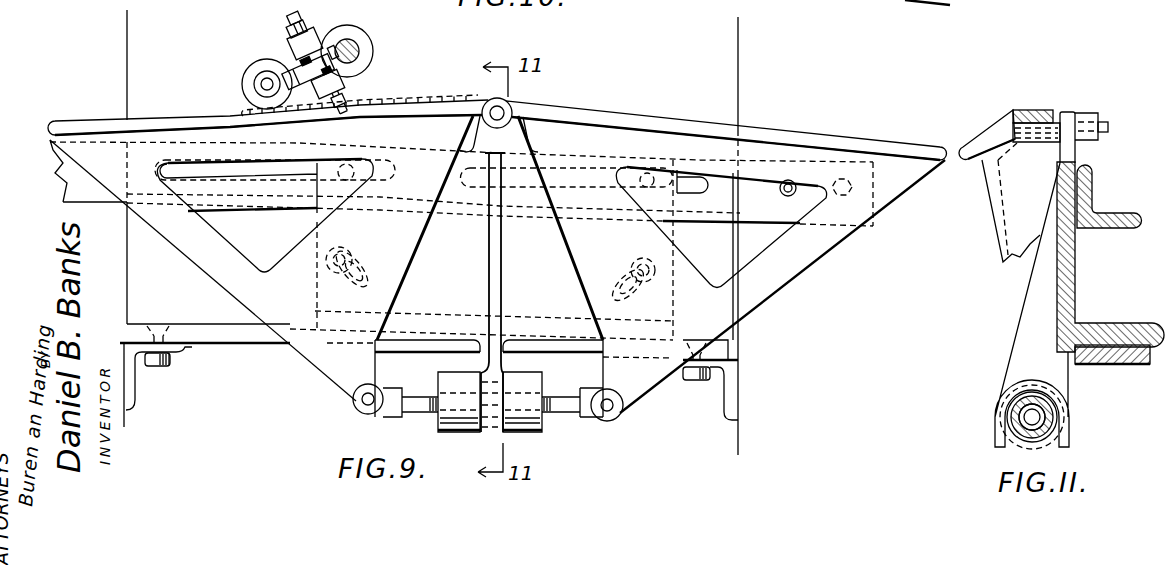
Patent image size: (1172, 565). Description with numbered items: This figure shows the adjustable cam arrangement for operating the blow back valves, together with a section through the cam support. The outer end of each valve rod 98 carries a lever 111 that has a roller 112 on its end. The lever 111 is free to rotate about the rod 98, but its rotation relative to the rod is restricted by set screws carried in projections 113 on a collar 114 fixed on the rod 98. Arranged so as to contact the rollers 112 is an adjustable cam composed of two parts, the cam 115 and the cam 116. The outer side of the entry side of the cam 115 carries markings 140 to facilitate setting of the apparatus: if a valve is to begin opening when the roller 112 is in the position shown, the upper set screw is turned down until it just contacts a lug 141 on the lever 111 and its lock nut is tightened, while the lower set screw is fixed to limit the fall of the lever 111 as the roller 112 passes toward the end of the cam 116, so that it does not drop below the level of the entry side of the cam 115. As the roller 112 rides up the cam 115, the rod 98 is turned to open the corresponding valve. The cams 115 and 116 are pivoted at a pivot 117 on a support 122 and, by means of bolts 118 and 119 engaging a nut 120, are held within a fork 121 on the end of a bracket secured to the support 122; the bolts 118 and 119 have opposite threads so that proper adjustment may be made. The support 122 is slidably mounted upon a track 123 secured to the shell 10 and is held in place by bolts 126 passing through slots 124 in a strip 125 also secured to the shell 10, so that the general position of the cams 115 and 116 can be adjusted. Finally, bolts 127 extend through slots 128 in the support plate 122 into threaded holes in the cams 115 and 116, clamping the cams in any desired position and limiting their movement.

In FIG. 9, the shell 10 is at (736, 90).
In FIG. 9, the rod 98 is at (358, 41).
In FIG. 9, the lever 111 is at (280, 65).
In FIG. 9, the roller 112 is at (245, 80).
In FIG. 9, the projections 113 is at (320, 35).
In FIG. 9, the collar 114 is at (353, 28).
In FIG. 9, the cam part (entry side of cam) 115 is at (412, 100).
In FIG. 11, the cam part (entry side of cam) 115 is at (980, 133).
In FIG. 9, the cam part 116 is at (610, 112).
In FIG. 11, the cam part 116 is at (1035, 112).
In FIG. 9, the pivot 117 is at (505, 110).
In FIG. 9, the bolt 118 is at (417, 393).
In FIG. 9, the bolt 119 is at (563, 397).
In FIG. 9, the nut 120 is at (537, 437).
In FIG. 11, the nut 120 is at (1050, 433).
In FIG. 9, the fork 121 is at (492, 430).
In FIG. 11, the fork 121 is at (997, 403).
In FIG. 9, the support 122 is at (520, 298).
In FIG. 11, the support 122 is at (1060, 272).
In FIG. 9, the track 123 is at (245, 343).
In FIG. 11, the track 123 is at (1112, 362).
In FIG. 9, the slots 124 is at (247, 178).
In FIG. 11, the strip 125 is at (1105, 228).
In FIG. 9, the bolts 126 is at (367, 153).
In FIG. 9, the bolts 127 is at (350, 247).
In FIG. 9, the slots 128 is at (365, 265).
In FIG. 9, the markings 140 is at (305, 124).
In FIG. 9, the lug 141 is at (290, 50).